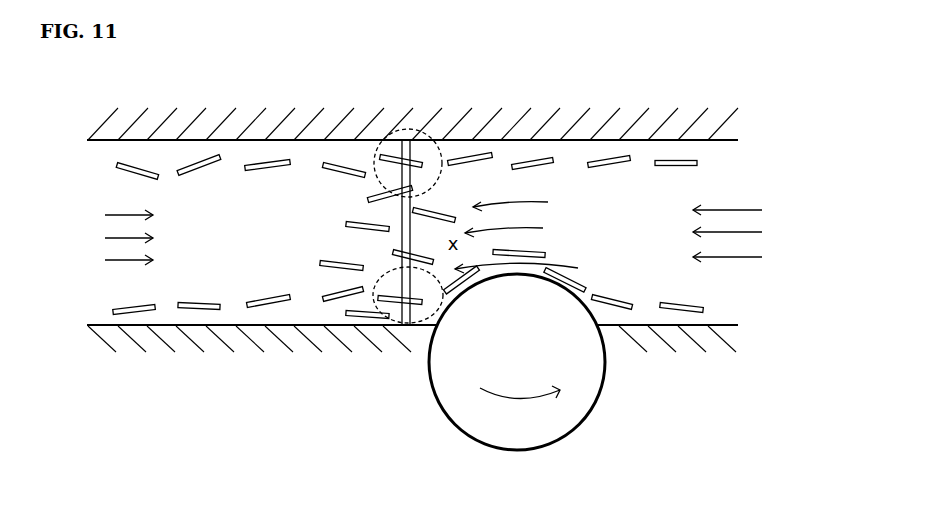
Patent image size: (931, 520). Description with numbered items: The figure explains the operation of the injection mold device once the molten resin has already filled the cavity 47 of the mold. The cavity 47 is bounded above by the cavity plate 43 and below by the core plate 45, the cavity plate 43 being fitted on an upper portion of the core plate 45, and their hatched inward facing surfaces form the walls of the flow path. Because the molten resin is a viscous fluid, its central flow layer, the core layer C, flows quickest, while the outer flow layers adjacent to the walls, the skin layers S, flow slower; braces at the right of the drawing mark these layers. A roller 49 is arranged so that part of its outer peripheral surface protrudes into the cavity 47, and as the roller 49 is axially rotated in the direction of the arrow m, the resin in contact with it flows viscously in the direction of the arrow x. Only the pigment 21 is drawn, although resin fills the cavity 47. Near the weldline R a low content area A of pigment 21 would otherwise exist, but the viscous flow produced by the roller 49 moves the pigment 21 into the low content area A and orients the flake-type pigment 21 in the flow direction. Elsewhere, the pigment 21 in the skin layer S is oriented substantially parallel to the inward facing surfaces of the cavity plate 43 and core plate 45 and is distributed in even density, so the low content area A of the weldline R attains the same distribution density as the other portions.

The pigment 21 is at (203, 157).
The cavity plate 43 is at (613, 128).
The core plate 45 is at (665, 338).
The cavity 47 is at (118, 198).
The roller 49 is at (463, 398).
The weldline R is at (402, 213).
The low content area A is at (432, 132).
The skin layer S is at (757, 134).
The core layer C is at (757, 199).